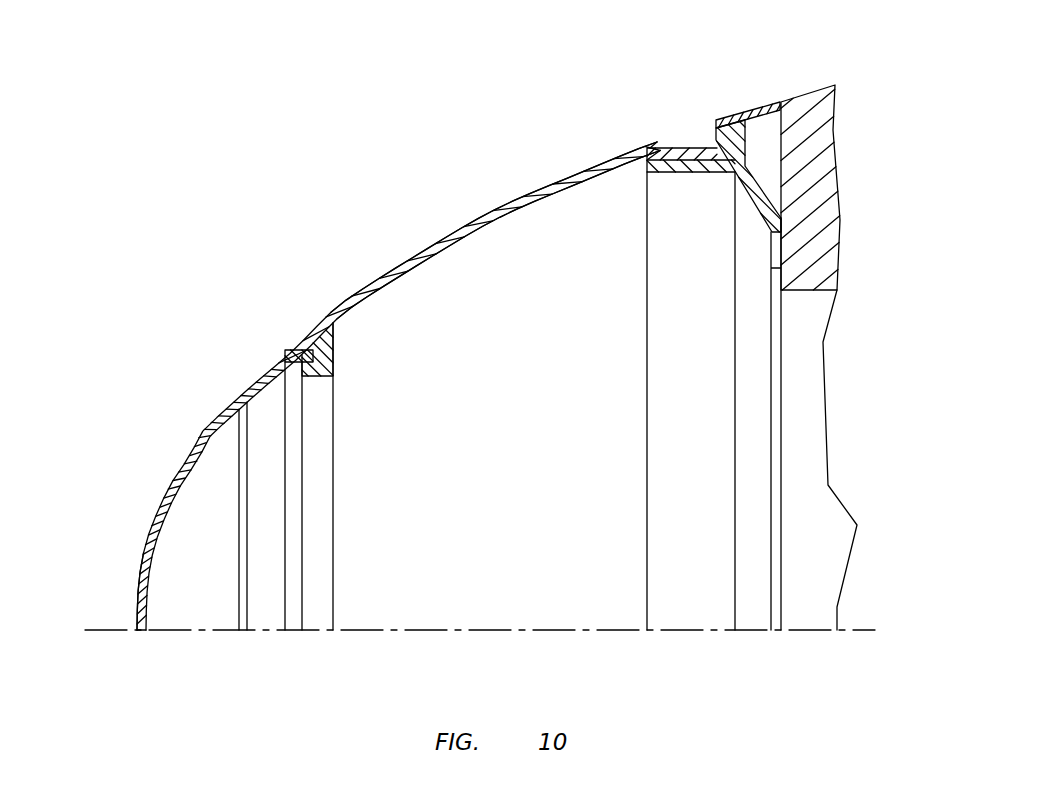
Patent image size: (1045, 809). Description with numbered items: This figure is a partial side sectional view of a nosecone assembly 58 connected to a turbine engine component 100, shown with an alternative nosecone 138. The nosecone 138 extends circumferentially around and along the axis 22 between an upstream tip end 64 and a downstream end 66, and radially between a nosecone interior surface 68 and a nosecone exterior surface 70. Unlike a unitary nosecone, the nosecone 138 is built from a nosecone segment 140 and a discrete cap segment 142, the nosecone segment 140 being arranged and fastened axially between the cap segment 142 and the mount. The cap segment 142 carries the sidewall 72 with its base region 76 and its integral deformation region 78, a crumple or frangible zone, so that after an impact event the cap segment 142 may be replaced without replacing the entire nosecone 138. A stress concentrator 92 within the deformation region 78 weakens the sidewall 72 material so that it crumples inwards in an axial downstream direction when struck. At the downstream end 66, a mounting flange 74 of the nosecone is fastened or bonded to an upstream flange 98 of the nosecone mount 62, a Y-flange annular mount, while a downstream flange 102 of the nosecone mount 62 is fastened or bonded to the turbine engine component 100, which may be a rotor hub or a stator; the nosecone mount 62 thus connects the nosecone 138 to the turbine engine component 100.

The axis 22 is at (866, 628).
The nosecone assembly 58 is at (122, 183).
The nosecone mount 62 is at (722, 117).
The upstream tip end 64 is at (140, 632).
The downstream end 66 is at (716, 146).
The nosecone interior surface 68 is at (209, 450).
The nosecone exterior surface 70 is at (198, 436).
The sidewall 72 is at (174, 474).
The mounting flange 74 is at (670, 146).
The base region 76 is at (283, 326).
The deformation region 78 is at (243, 326).
The stress concentrator 92 is at (239, 633).
The upstream flange 98 is at (697, 174).
The turbine engine component 100 is at (834, 158).
The downstream flange 102 is at (769, 247).
The nosecone 138 is at (408, 254).
The nosecone segment 140 is at (499, 207).
The cap segment 142 is at (141, 561).